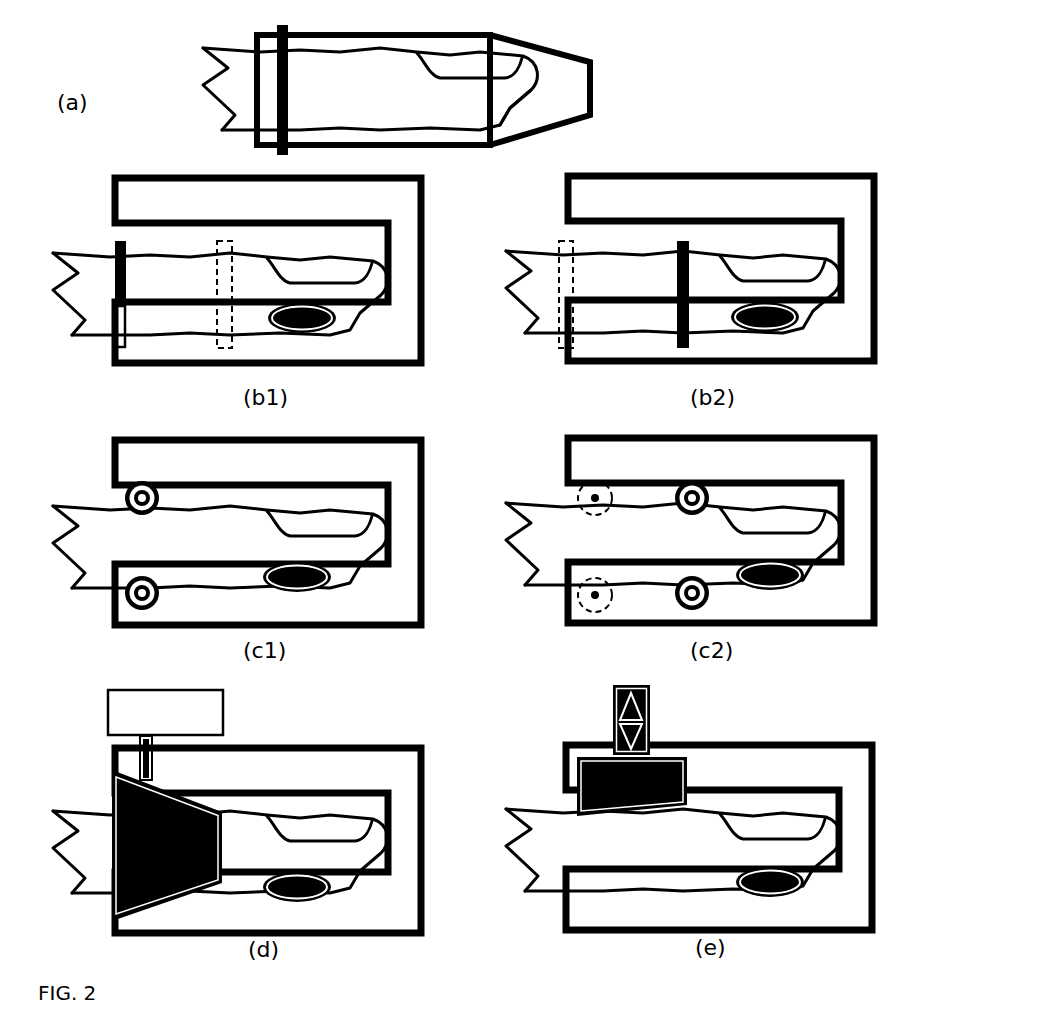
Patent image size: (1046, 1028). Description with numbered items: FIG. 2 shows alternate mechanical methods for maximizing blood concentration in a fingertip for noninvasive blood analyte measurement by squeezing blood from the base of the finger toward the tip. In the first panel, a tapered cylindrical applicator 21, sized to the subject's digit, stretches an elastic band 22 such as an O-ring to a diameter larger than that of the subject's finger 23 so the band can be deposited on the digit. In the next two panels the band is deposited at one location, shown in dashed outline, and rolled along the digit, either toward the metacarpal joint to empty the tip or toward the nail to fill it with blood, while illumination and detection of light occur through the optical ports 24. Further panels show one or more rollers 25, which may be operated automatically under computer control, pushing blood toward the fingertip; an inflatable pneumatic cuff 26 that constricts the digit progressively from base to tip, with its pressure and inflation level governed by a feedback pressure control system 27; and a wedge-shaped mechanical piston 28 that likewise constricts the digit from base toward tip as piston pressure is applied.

The tapered cylindrical applicator 21 is at (588, 85).
The elastic band 22 is at (285, 92).
The subject's finger 23 is at (518, 82).
The optical ports 24 is at (757, 318).
The roller 25 is at (163, 492).
The inflatable pneumatic cuff 26 is at (197, 813).
The feedback pressure control system 27 is at (237, 718).
The mechanical piston 28 is at (650, 780).